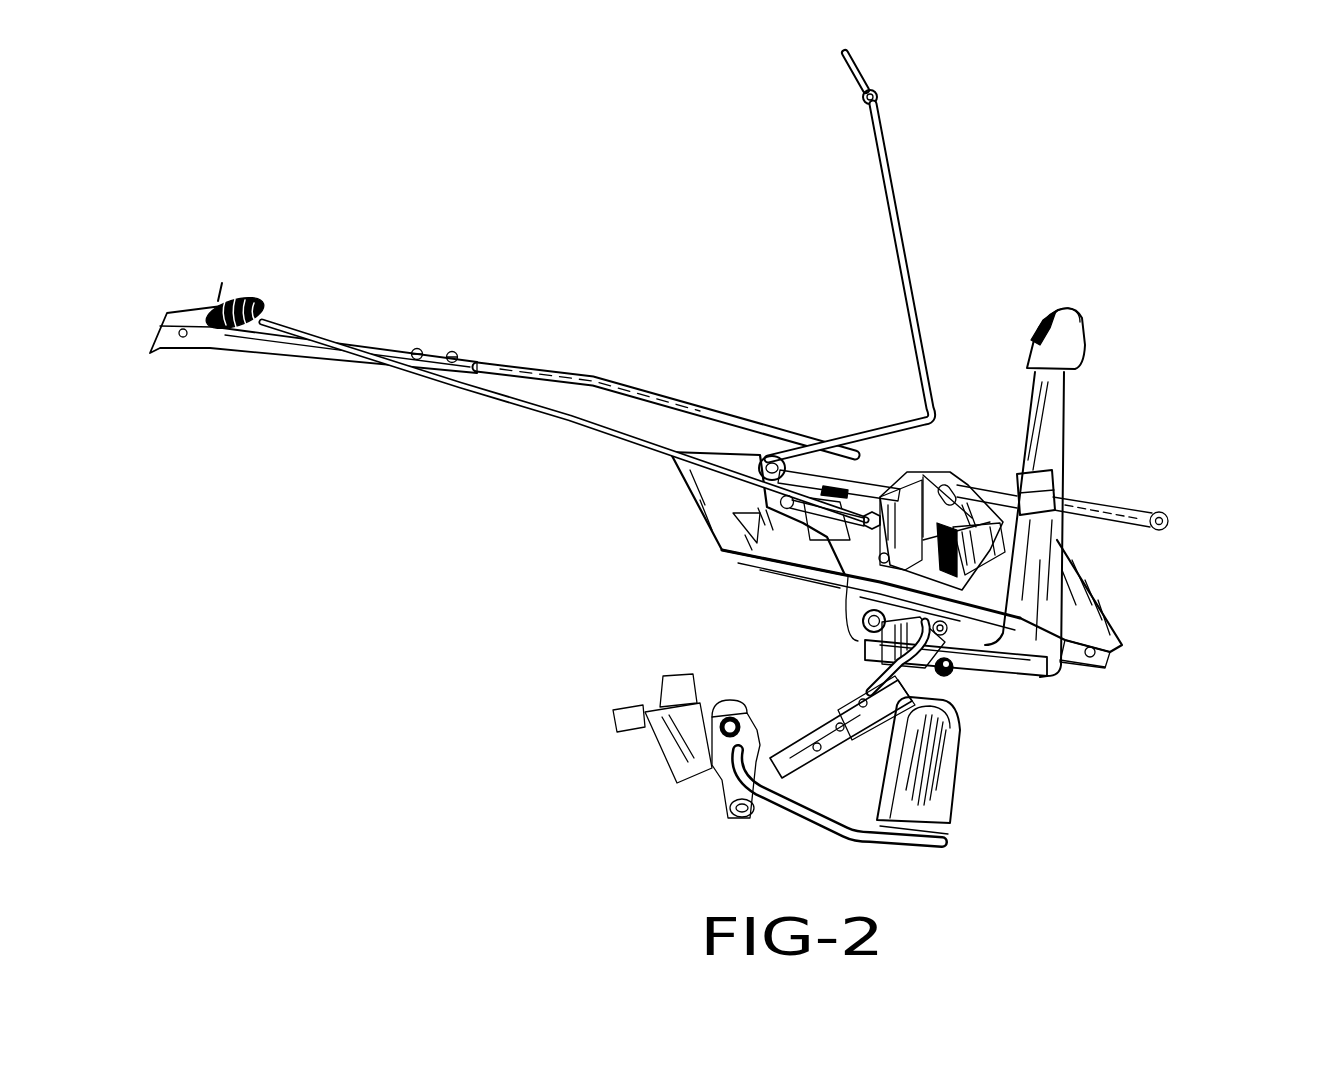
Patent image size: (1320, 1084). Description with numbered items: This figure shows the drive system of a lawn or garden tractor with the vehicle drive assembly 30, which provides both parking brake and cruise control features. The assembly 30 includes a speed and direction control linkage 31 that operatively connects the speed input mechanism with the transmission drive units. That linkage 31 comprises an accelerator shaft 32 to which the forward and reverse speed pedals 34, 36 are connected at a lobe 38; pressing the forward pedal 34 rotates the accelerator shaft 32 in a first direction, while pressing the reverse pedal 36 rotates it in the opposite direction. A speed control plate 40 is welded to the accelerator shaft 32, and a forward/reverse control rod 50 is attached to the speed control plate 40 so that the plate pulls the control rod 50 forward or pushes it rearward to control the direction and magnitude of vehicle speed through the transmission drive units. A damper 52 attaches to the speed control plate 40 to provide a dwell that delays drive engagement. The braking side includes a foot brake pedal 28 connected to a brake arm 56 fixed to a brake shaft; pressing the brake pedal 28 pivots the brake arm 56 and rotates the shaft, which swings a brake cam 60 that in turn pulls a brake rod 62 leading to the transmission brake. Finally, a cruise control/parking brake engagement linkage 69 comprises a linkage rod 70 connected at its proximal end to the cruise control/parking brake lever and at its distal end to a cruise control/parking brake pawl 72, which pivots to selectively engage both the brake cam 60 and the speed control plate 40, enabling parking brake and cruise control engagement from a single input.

The foot brake pedal 28 is at (1062, 315).
The vehicle drive assembly 30 is at (1210, 167).
The speed and direction control linkage 31 is at (881, 560).
The accelerator shaft 32 is at (852, 640).
The forward speed pedal 34 is at (1045, 482).
The reverse speed pedal 36 is at (948, 772).
The lobe 38 is at (893, 655).
The speed control plate 40 is at (928, 468).
The forward/reverse control rod 50 is at (546, 364).
The damper 52 is at (1080, 518).
The brake arm 56 is at (1058, 396).
The brake cam 60 is at (835, 530).
The brake rod 62 is at (552, 430).
The cruise control/parking brake engagement linkage 69 is at (755, 324).
The linkage rod 70 is at (886, 198).
The cruise control/parking brake pawl 72 is at (860, 478).